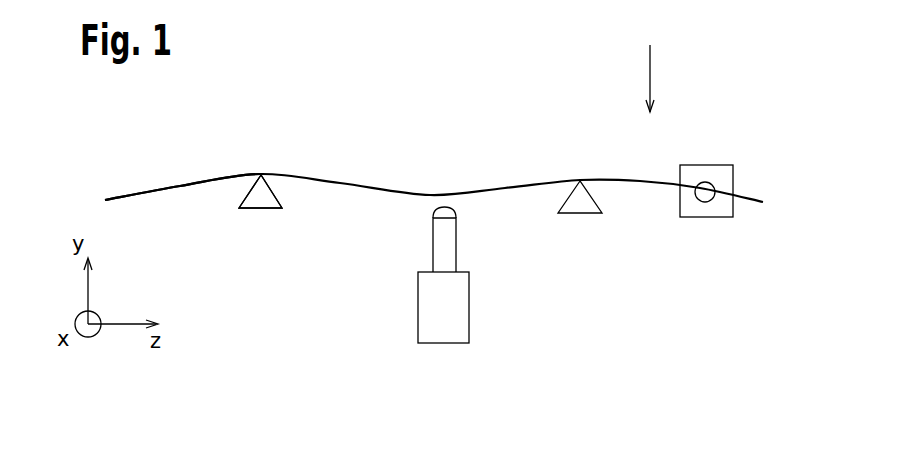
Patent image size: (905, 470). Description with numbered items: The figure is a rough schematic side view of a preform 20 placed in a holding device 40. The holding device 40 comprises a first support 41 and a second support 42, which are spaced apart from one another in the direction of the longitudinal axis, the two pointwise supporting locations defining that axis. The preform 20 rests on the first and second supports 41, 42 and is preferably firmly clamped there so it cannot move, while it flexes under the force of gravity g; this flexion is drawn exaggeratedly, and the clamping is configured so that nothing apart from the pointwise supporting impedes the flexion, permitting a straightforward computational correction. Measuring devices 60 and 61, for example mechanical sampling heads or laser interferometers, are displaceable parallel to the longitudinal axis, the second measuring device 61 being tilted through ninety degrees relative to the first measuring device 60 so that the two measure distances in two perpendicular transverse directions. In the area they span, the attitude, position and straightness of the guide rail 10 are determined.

The guide rail 10 is at (333, 183).
The preform 20 is at (182, 187).
The holding device 40 is at (262, 209).
The first support 41 is at (260, 191).
The second support 42 is at (580, 214).
The first measuring device 60 is at (444, 344).
The second measuring device 61 is at (734, 180).
The force of gravity g is at (652, 73).